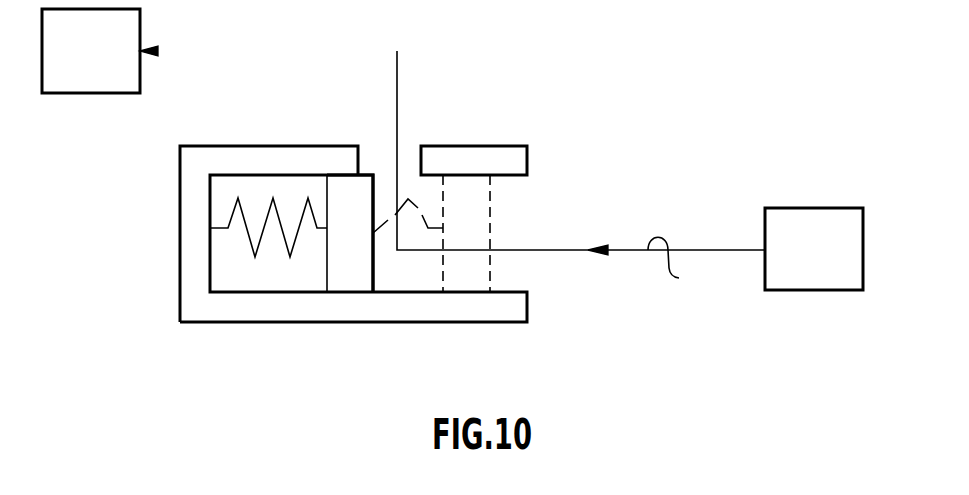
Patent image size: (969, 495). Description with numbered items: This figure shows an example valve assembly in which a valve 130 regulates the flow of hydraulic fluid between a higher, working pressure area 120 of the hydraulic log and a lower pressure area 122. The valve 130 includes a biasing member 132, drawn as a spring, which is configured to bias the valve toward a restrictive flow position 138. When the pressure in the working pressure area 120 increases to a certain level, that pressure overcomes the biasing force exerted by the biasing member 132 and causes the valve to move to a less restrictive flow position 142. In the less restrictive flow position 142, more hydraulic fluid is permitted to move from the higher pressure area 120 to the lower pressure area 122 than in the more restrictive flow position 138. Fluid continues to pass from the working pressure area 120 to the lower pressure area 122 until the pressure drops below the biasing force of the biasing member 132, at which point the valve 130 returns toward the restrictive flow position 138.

The higher pressure area 120 is at (790, 260).
The lower pressure area 122 is at (66, 60).
The valve 130 is at (600, 93).
The biasing member 132 is at (264, 282).
The restrictive flow position 138 is at (490, 265).
The less restrictive flow position 142 is at (373, 273).